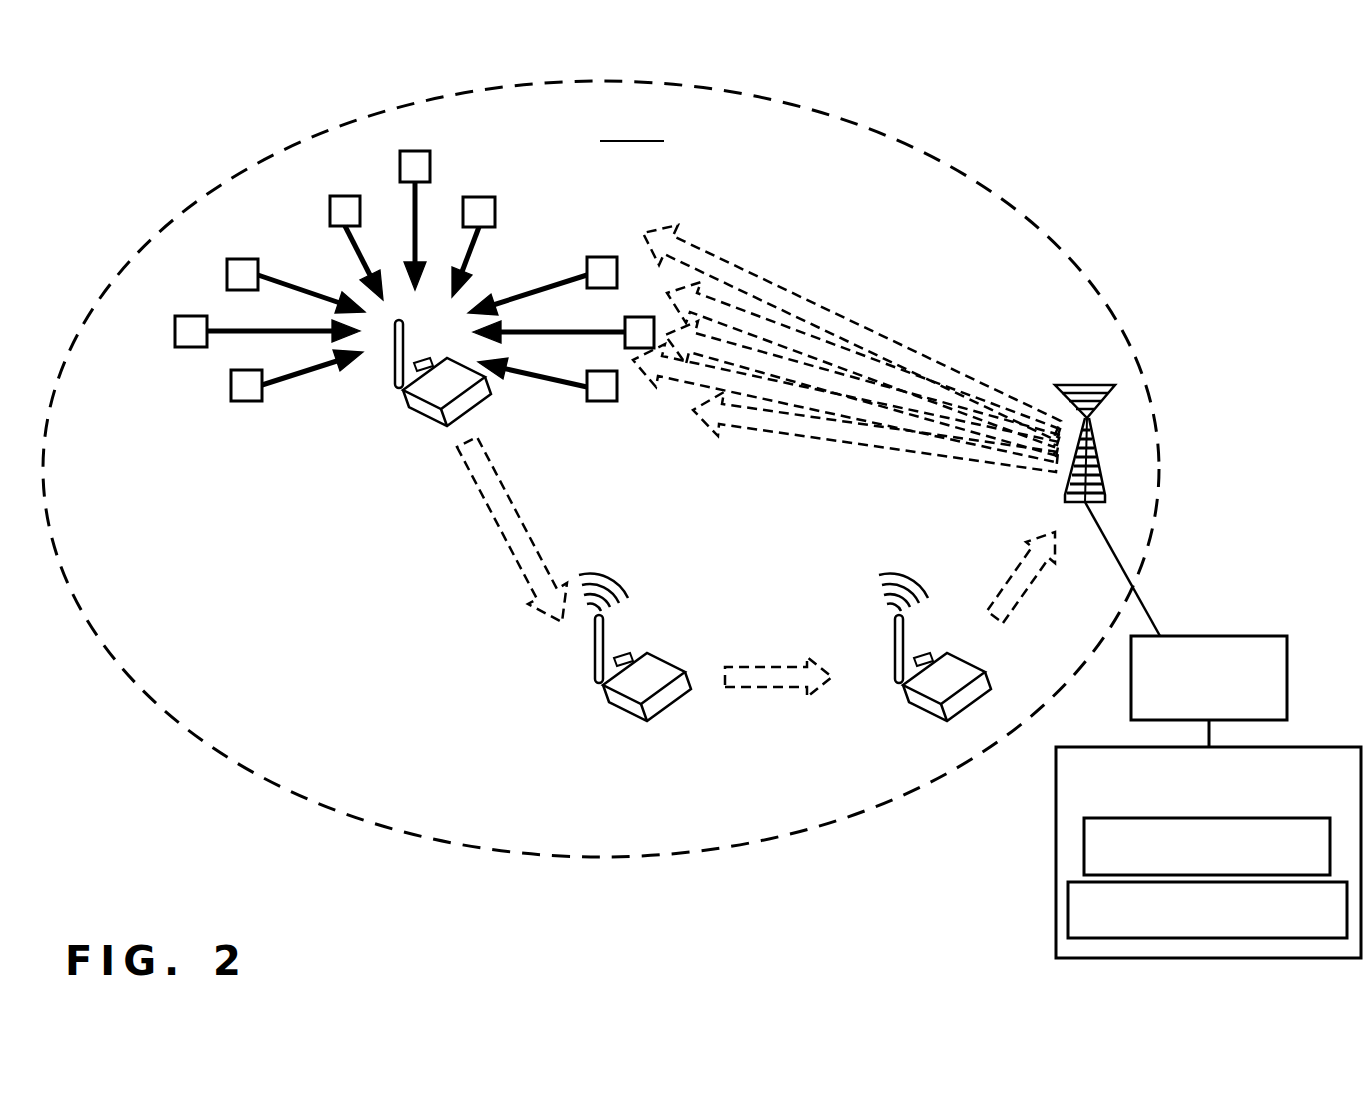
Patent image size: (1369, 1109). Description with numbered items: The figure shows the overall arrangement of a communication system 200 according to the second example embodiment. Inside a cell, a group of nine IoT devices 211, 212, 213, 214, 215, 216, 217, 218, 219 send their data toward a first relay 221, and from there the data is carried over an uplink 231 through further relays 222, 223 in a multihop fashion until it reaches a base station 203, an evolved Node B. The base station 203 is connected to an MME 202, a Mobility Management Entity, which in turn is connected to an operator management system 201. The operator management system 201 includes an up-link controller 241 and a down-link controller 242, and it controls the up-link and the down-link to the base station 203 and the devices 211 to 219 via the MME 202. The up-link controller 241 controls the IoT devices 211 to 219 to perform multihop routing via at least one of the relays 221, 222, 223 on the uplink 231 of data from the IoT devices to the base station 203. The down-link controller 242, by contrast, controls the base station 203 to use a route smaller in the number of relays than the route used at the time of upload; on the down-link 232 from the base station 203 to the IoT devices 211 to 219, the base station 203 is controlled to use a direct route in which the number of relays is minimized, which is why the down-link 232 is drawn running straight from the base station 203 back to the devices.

The communication system 200 is at (170, 178).
The operator management system 201 is at (1066, 762).
The MME 202 is at (1256, 636).
The base station 203 is at (1078, 384).
The IoT device 211 is at (618, 396).
The IoT device 212 is at (625, 330).
The IoT device 213 is at (592, 257).
The IoT device 214 is at (495, 197).
The IoT device 215 is at (400, 163).
The IoT device 216 is at (330, 215).
The IoT device 217 is at (227, 270).
The IoT device 218 is at (175, 330).
The IoT device 219 is at (229, 381).
The relay 221 is at (417, 411).
The relay 222 is at (670, 666).
The relay 223 is at (962, 671).
The uplink 231 is at (512, 550).
The down-link 232 is at (830, 434).
The up-link controller 241 is at (1084, 848).
The down-link controller 242 is at (1068, 906).